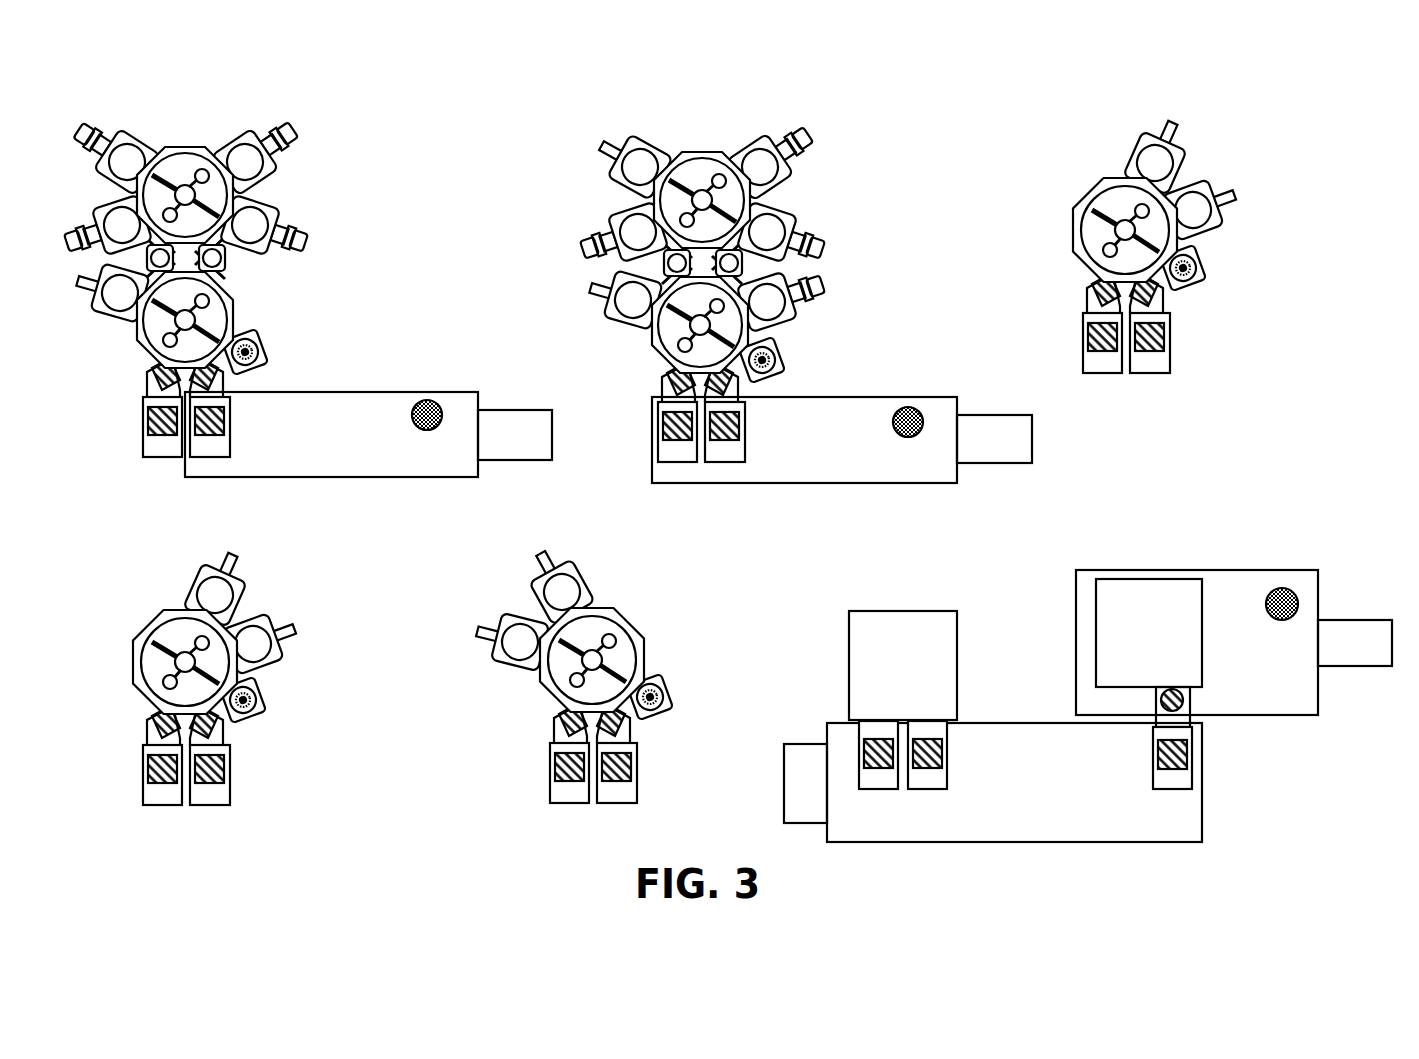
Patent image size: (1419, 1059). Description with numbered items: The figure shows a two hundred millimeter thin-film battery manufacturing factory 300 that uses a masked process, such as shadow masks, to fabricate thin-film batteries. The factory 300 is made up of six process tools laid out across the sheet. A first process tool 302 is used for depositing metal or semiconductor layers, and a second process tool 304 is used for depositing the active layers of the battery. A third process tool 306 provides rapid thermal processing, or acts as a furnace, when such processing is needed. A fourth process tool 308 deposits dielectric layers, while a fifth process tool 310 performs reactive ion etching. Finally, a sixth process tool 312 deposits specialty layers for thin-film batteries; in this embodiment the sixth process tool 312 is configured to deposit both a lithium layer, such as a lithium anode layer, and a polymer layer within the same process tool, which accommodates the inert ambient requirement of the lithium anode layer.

The factory 300 is at (1074, 56).
The first process tool 302 is at (318, 170).
The second process tool 304 is at (932, 148).
The third process tool 306 is at (1222, 151).
The fourth process tool 308 is at (282, 583).
The fifth process tool 310 is at (632, 580).
The sixth process tool 312 is at (1160, 524).